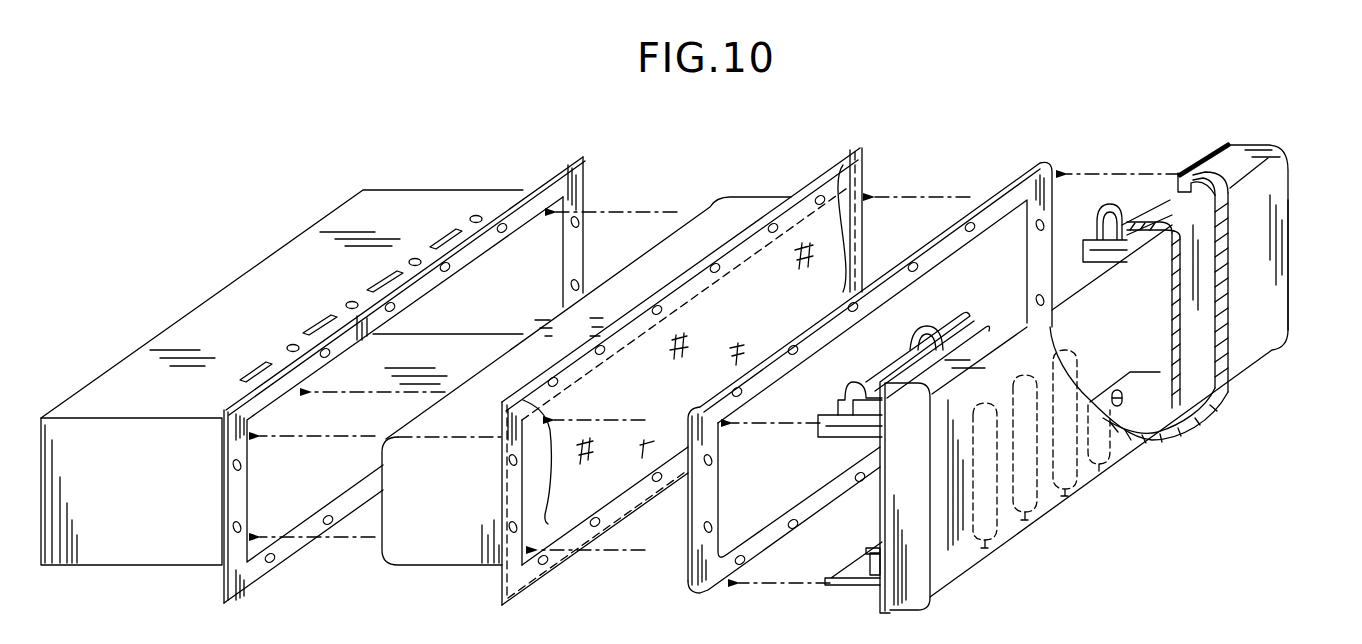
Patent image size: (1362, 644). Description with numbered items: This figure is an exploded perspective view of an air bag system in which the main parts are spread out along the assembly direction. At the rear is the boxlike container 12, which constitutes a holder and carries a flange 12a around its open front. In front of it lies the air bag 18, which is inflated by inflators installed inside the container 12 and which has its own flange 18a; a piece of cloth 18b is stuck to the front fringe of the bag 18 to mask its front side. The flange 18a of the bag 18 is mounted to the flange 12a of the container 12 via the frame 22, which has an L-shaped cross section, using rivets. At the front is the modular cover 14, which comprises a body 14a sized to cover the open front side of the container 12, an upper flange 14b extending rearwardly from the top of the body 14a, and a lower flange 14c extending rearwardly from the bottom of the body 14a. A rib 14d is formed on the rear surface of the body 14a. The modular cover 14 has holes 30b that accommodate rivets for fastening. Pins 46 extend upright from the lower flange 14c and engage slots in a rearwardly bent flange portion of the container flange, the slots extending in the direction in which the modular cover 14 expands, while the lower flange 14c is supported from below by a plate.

The container 12 is at (211, 311).
The flange 12a is at (578, 158).
The air bag 18 is at (742, 207).
The flange 18a is at (845, 176).
The piece of cloth 18b is at (552, 487).
The frame 22 is at (1023, 185).
The holes 30b is at (850, 384).
The pins 46 is at (875, 557).
The modular cover 14 is at (1252, 302).
The body 14a is at (1253, 350).
The upper flange 14b is at (1162, 212).
The lower flange 14c is at (850, 588).
The rib 14d is at (1006, 522).